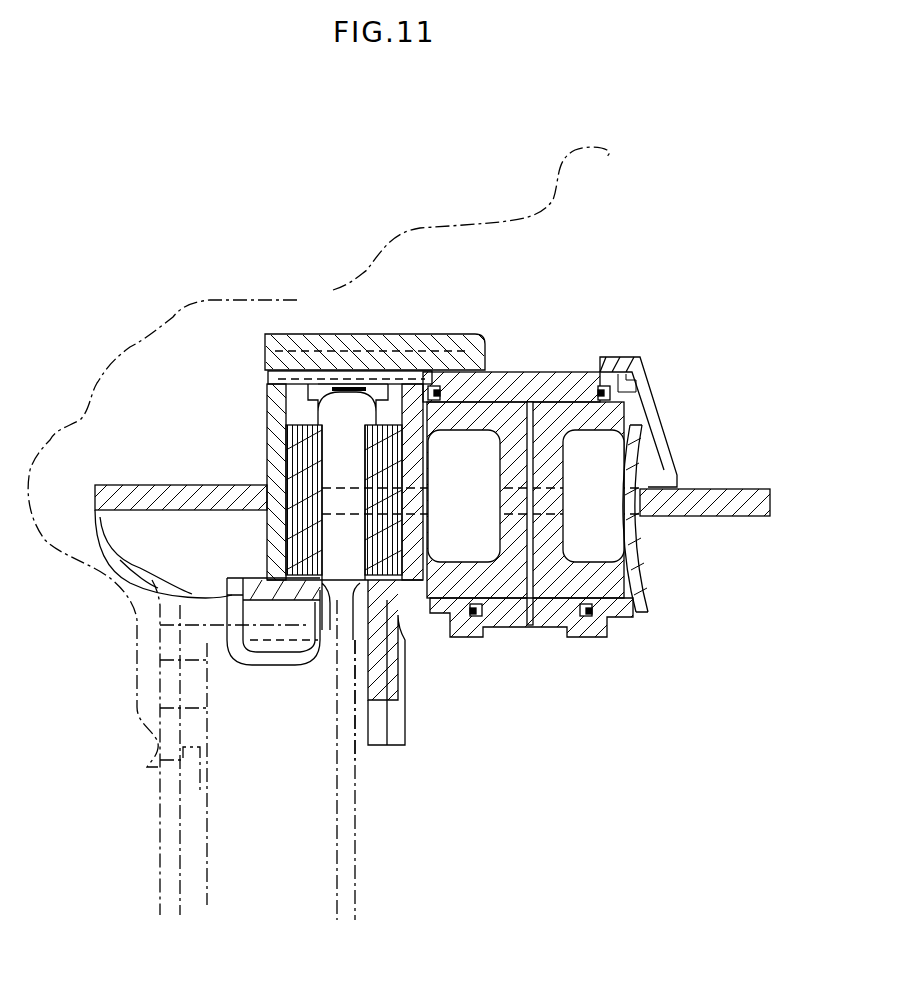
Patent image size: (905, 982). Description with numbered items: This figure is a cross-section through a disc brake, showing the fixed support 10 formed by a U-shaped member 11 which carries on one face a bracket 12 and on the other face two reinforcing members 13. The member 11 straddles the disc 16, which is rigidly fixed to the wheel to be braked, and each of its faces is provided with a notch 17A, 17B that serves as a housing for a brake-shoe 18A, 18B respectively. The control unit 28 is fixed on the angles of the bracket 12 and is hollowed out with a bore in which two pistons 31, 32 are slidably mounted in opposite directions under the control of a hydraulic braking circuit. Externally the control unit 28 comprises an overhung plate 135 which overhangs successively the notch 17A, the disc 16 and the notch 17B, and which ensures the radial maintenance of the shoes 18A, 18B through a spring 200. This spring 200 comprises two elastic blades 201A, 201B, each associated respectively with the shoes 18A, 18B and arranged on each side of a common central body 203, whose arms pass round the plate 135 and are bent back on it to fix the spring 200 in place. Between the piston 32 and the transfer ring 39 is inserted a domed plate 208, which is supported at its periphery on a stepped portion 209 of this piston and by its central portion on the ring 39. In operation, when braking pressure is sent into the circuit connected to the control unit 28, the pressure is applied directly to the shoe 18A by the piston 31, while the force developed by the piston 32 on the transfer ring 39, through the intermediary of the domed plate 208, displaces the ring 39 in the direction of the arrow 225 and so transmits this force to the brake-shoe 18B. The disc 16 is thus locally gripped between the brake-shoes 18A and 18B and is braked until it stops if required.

The fixed support 10 is at (410, 736).
The U-shaped member 11 is at (357, 733).
The bracket 12 is at (405, 652).
The reinforcing members 13 is at (266, 570).
The disc 16 is at (328, 410).
The notch 17A is at (420, 400).
The notch 17B is at (268, 383).
The brake-shoe 18A is at (428, 452).
The brake-shoe 18B is at (268, 420).
The control unit 28 is at (584, 362).
The piston 31 is at (526, 605).
The piston 32 is at (527, 535).
The transfer ring 39 is at (733, 488).
The overhung plate 135 is at (366, 386).
The spring 200 is at (362, 394).
The elastic blade 201A is at (408, 380).
The elastic blade 201B is at (303, 408).
The central body 203 is at (325, 384).
The domed plate 208 is at (645, 472).
The stepped portion 209 is at (627, 568).
The arrow 225 is at (165, 451).